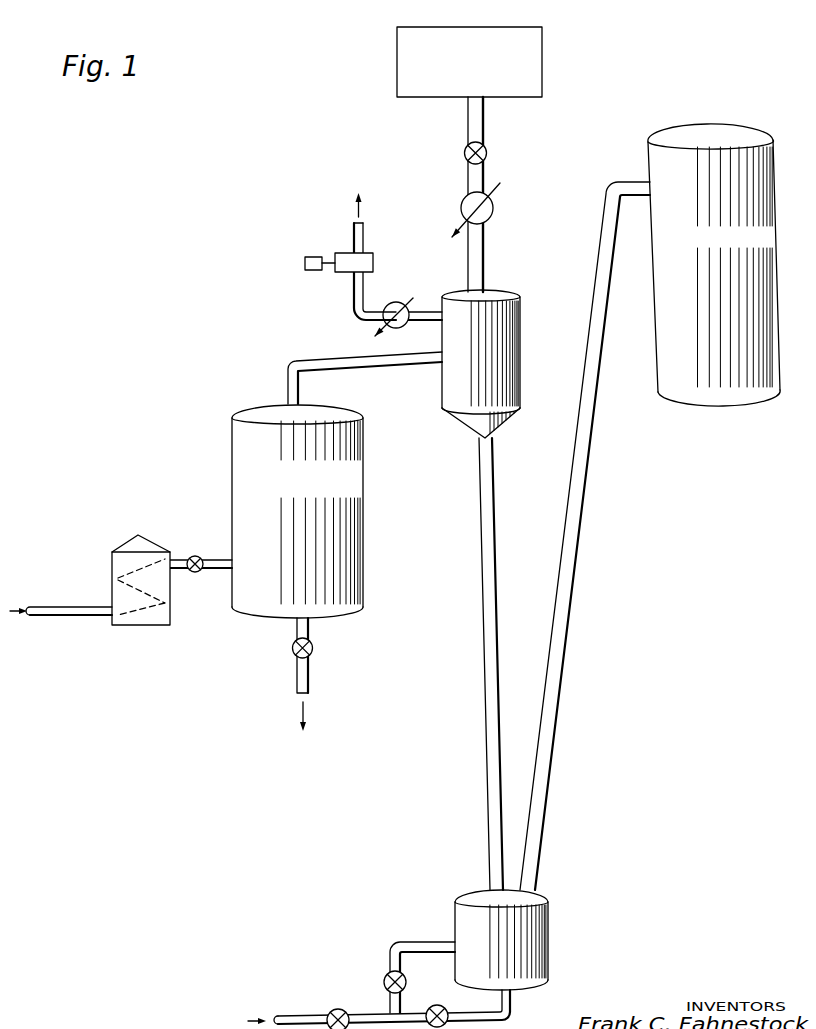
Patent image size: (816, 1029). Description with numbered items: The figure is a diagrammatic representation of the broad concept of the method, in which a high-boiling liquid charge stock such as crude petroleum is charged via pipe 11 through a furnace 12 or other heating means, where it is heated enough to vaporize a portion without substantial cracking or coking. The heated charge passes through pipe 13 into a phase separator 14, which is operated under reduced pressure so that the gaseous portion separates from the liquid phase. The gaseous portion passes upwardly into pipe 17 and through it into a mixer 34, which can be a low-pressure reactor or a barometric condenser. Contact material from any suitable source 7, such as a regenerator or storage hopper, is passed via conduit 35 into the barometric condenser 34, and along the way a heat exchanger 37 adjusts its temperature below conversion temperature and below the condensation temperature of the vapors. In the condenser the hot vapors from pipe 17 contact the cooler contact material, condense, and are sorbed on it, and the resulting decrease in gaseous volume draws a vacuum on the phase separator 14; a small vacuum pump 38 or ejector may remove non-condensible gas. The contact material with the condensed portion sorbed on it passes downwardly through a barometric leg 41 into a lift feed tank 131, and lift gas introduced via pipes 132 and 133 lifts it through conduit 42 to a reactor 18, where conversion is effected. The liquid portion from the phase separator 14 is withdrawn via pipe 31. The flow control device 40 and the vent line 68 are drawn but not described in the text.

The contact material source 7 is at (543, 55).
The charge pipe 11 is at (70, 618).
The furnace 12 is at (157, 624).
The heated charge pipe 13 is at (215, 571).
The phase separator 14 is at (230, 446).
The vapor pipe 17 is at (299, 380).
The reactor 18 is at (668, 390).
The liquid withdrawal pipe 31 is at (296, 680).
The mixer 34 is at (522, 323).
The contact material conduit 35 is at (485, 256).
The heat exchanger 37 is at (461, 205).
The vacuum pump 38 is at (374, 259).
The flow control device on vent line 40 is at (402, 299).
The barometric leg 41 is at (479, 548).
The lift conduit 42 is at (574, 545).
The vent line 68 is at (352, 301).
The lift feed tank 131 is at (549, 924).
The lift gas pipe 132 is at (389, 958).
The lift gas pipe 133 is at (512, 1005).